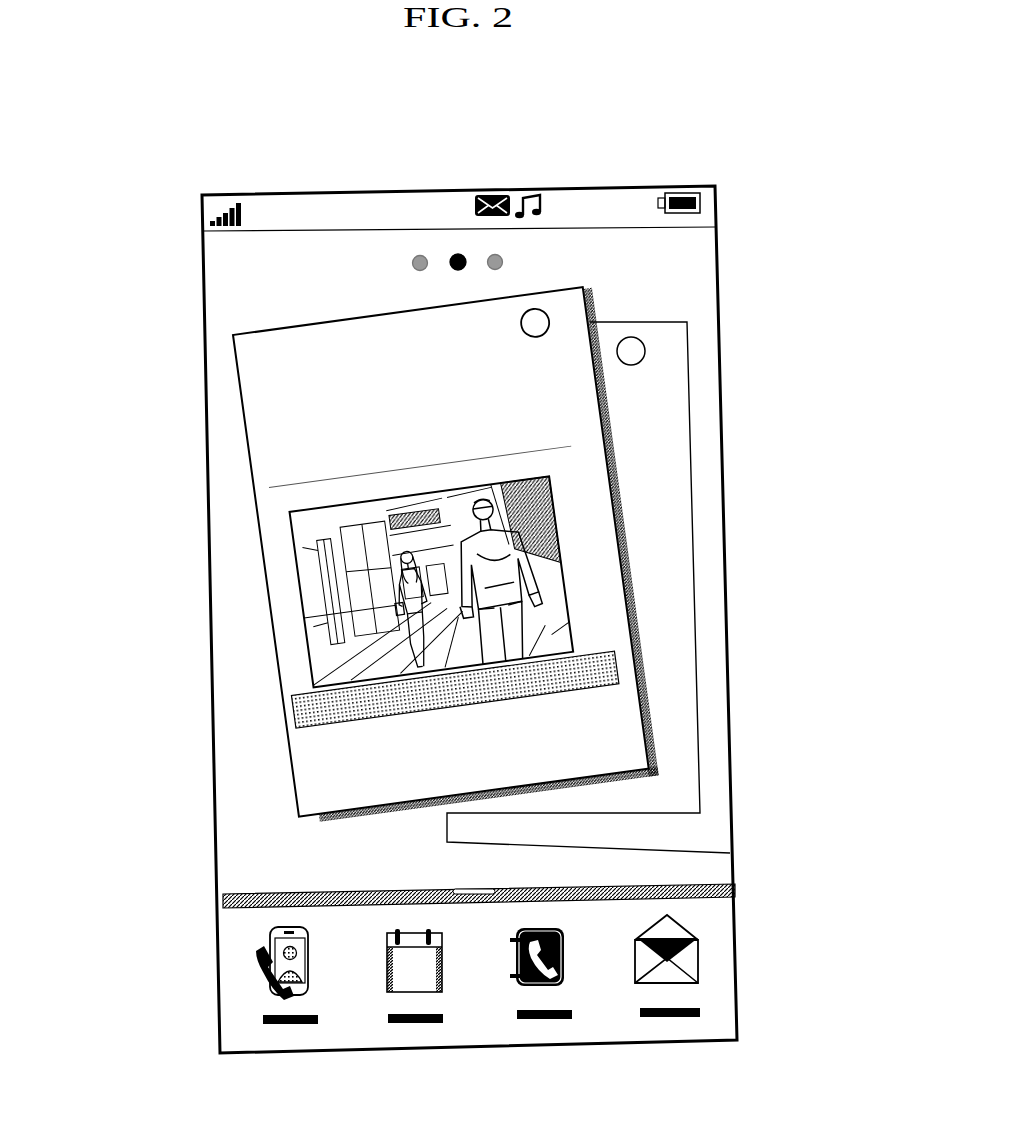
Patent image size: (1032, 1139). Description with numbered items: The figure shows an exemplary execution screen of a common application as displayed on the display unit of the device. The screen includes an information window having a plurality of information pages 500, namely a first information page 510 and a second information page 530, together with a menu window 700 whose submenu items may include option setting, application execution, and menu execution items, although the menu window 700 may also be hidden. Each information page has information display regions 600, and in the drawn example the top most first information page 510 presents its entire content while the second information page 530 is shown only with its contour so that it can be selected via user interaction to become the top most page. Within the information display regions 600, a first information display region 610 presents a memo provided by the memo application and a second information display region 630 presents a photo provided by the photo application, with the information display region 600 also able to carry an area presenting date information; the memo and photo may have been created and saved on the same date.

The information pages 500 is at (793, 210).
The first information page 510 is at (590, 282).
The second information page 530 is at (672, 408).
The information display regions 600 is at (340, 551).
The first information display region 610 is at (409, 392).
The second information display region 630 is at (333, 633).
The menu window 700 is at (713, 960).